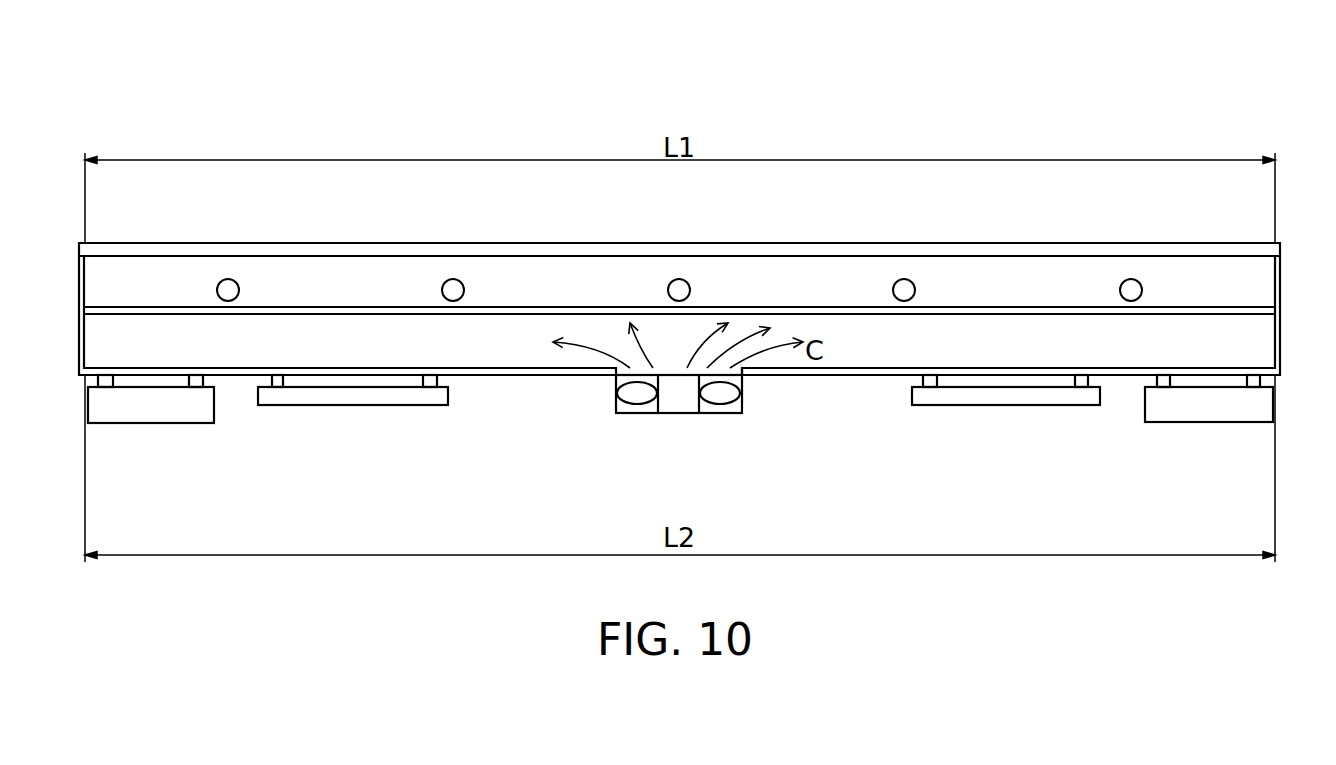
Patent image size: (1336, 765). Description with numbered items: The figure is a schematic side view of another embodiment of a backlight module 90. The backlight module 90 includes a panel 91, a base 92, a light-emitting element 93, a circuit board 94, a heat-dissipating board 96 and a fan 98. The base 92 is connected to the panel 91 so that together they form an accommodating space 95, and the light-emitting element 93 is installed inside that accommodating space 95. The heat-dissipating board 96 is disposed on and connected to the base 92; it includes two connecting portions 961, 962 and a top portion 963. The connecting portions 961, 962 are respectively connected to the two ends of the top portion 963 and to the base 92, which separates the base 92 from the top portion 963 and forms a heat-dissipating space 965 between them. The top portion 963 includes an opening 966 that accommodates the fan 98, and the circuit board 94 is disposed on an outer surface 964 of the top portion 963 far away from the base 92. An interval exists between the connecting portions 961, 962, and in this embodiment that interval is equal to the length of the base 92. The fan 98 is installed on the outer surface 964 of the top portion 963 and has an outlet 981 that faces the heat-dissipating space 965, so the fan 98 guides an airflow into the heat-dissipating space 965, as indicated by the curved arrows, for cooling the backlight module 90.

The backlight module 90 is at (95, 94).
The panel 91 is at (1153, 248).
The base 92 is at (80, 282).
The light-emitting element 93 is at (453, 289).
The circuit board 94 is at (147, 412).
The accommodating space 95 is at (553, 273).
The heat-dissipating board 96 is at (79, 358).
The connecting portion 961 is at (80, 342).
The connecting portion 962 is at (1282, 343).
The top portion 963 is at (887, 377).
The outer surface 964 is at (824, 377).
The heat-dissipating space 965 is at (990, 345).
The opening 966 is at (752, 375).
The fan 98 is at (635, 413).
The outlet 981 is at (678, 370).